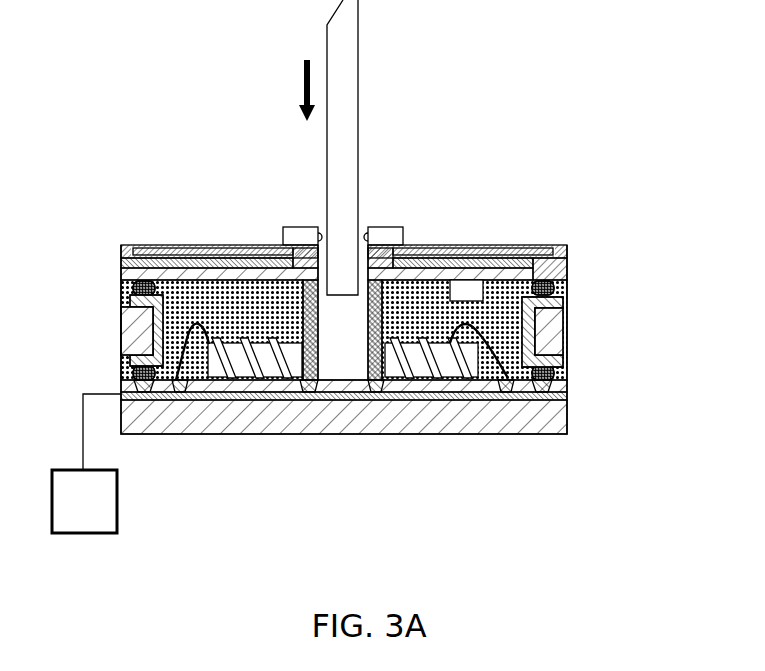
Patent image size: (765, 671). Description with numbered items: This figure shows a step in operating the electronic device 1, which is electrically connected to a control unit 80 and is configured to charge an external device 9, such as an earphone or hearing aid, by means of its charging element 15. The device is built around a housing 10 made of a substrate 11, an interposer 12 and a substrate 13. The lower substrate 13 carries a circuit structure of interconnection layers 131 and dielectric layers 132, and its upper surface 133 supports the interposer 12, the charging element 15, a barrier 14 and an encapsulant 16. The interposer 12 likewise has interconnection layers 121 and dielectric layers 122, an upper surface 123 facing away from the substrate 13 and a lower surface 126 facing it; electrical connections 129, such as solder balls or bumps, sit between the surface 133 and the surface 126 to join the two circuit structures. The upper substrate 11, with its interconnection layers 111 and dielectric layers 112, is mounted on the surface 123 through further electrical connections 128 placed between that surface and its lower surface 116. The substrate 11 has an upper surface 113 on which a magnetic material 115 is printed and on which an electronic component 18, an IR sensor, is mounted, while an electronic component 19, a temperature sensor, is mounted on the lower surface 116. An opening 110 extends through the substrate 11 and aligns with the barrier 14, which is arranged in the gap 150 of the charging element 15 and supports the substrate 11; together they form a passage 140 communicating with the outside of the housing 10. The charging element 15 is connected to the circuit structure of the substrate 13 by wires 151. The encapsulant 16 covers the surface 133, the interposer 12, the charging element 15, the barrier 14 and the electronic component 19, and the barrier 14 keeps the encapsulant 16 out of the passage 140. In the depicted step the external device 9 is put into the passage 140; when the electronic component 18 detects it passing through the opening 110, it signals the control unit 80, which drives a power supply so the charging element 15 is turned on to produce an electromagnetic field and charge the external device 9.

The electronic device 1 is at (646, 168).
The external device 9 is at (345, 50).
The housing 10 is at (690, 247).
The substrate 11 is at (567, 253).
The interposer 12 is at (567, 328).
The substrate 13 is at (567, 410).
The barrier 14 is at (375, 372).
The charging element 15 is at (450, 365).
The encapsulant 16 is at (216, 290).
The electronic component 18 is at (294, 232).
The electronic component 19 is at (470, 285).
The control unit 80 is at (72, 513).
The opening 110 is at (362, 262).
The interconnection layers 111 is at (420, 262).
The dielectric layers 112 is at (507, 275).
The surface 113 is at (128, 273).
The magnetic material 115 is at (170, 262).
The surface 116 is at (121, 288).
The interconnection layers 121 is at (121, 345).
The dielectric layers 122 is at (121, 320).
The surface 123 is at (567, 298).
The surface 126 is at (125, 370).
The electrical connections 128 is at (567, 288).
The electrical connections 129 is at (134, 383).
The interconnection layers 131 is at (178, 382).
The dielectric layers 132 is at (213, 417).
The surface 133 is at (567, 374).
The passage 140 is at (342, 362).
The gap 150 is at (302, 398).
The wires 151 is at (504, 382).